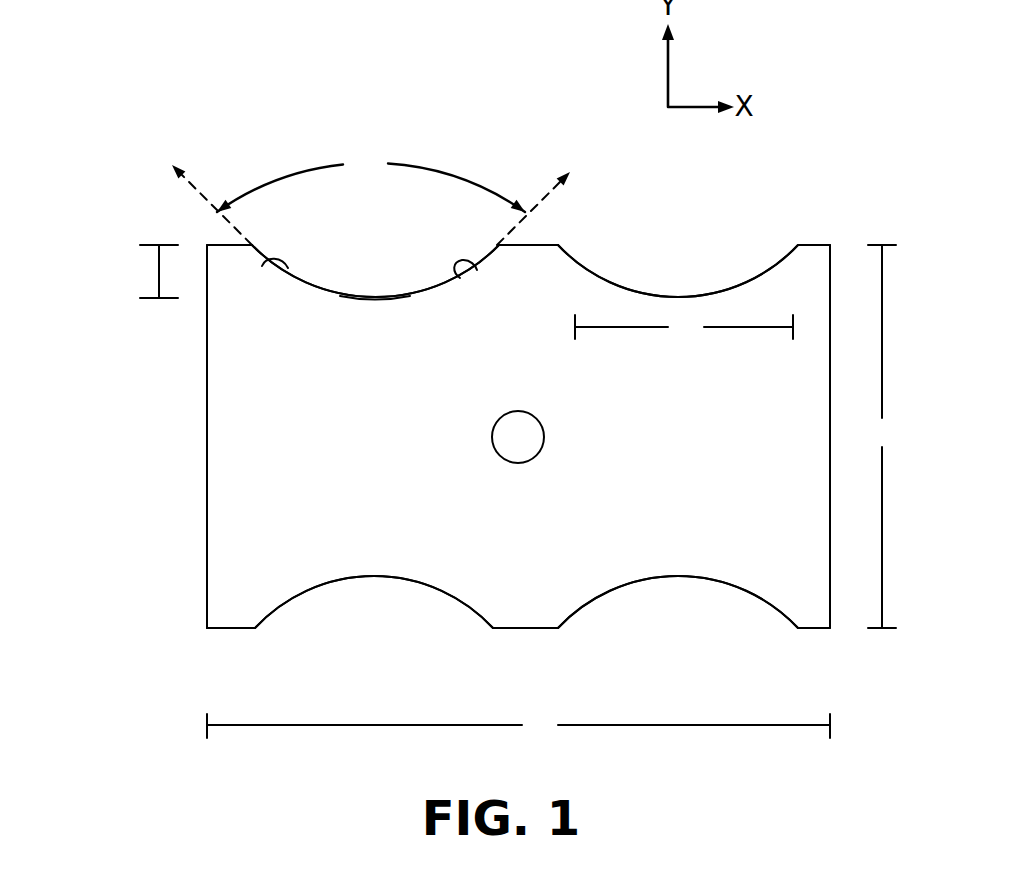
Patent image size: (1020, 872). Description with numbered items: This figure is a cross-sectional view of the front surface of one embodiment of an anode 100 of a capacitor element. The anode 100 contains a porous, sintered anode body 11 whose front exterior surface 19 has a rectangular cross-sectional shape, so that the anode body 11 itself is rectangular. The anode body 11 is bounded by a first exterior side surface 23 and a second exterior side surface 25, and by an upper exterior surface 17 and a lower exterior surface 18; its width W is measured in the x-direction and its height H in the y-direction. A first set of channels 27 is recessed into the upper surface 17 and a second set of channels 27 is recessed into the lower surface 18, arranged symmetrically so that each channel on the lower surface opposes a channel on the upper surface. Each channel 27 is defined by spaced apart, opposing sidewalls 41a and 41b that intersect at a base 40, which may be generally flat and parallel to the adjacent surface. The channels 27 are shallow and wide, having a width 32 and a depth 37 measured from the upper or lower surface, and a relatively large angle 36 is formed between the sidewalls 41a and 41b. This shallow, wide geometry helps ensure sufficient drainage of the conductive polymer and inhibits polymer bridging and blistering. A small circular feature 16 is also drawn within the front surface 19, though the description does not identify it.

The anode 100 is at (92, 181).
The anode body 11 is at (223, 583).
The hole 16 is at (520, 440).
The upper exterior surface 17 is at (540, 245).
The lower exterior surface 18 is at (518, 628).
The front exterior surface 19 is at (364, 445).
The first exterior side surface 23 is at (207, 425).
The second exterior side surface 25 is at (830, 333).
The channel 27 is at (419, 278).
The width 32 is at (684, 326).
The angle 36 is at (371, 195).
The depth 37 is at (140, 271).
The base 40 is at (353, 297).
The sidewall 41a is at (262, 266).
The sidewall 41b is at (460, 278).
The width W is at (518, 727).
The height H is at (882, 436).